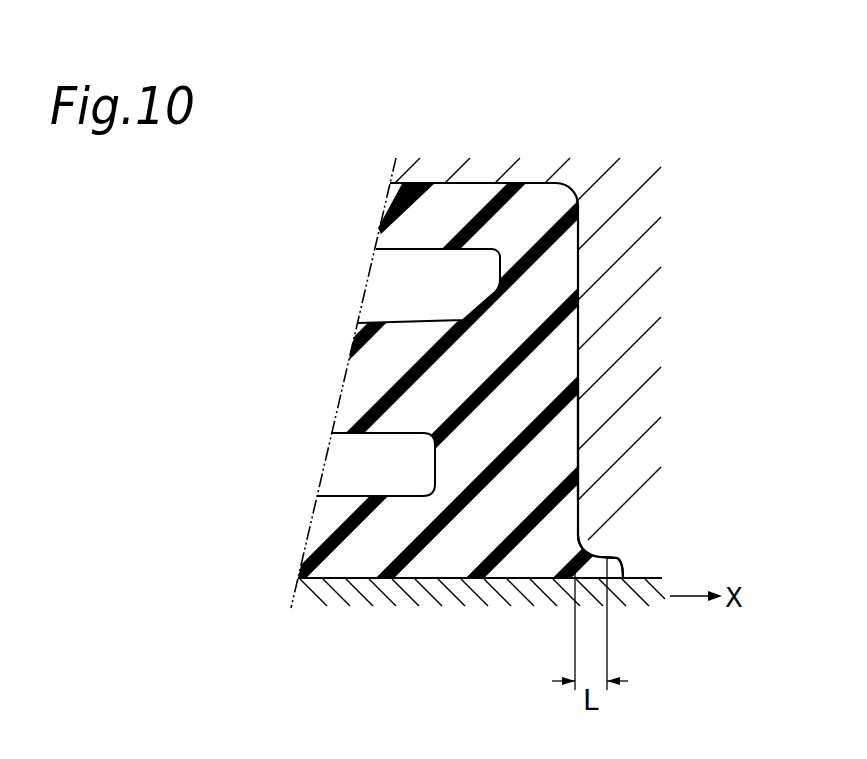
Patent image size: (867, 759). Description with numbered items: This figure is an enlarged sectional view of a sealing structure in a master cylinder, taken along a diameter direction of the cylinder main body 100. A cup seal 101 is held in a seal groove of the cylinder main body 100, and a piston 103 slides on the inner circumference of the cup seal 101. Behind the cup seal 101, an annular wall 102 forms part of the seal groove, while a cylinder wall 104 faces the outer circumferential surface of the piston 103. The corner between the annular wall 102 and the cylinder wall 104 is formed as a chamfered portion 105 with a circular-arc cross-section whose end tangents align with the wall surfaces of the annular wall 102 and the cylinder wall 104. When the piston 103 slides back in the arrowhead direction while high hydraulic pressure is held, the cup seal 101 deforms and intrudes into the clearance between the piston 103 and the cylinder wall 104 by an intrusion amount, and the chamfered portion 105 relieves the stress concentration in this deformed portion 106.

The cylinder main body 100 is at (655, 258).
The cup seal 101 is at (352, 382).
The annular wall 102 is at (563, 430).
The piston 103 is at (620, 558).
The cylinder wall 104 is at (642, 600).
The chamfered portion 105 is at (586, 542).
The deformed portion 106 is at (604, 558).